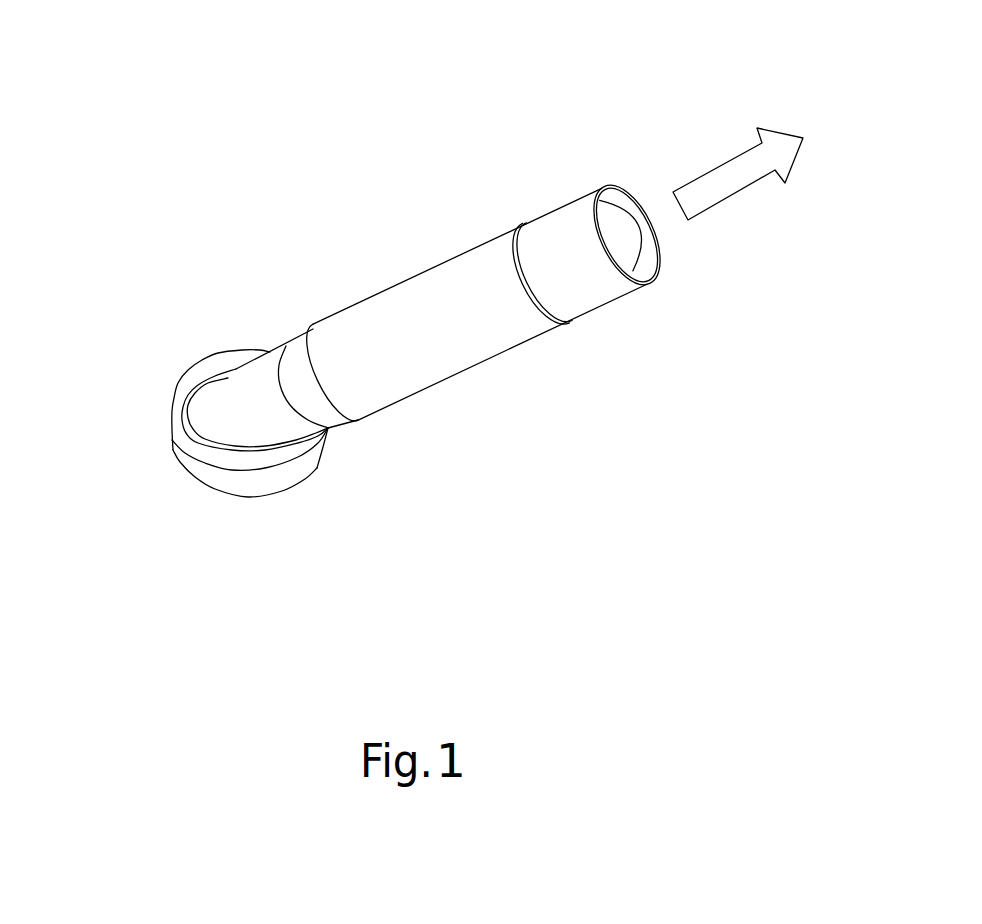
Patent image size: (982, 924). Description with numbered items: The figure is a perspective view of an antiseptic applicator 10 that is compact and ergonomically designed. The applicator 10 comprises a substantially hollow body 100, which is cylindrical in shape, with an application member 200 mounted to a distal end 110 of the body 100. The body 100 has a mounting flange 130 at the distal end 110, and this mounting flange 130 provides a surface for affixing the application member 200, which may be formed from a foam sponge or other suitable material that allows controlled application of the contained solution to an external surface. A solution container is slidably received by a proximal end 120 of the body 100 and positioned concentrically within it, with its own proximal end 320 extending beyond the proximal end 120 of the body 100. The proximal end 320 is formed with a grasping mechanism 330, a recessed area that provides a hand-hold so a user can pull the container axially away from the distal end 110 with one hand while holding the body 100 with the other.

The antiseptic applicator 10 is at (270, 184).
The body 100 is at (462, 375).
The distal end 110 is at (248, 452).
The proximal end 120 is at (541, 302).
The mounting flange 130 is at (209, 374).
The application member 200 is at (170, 428).
The proximal end 320 is at (603, 187).
The grasping mechanism 330 is at (539, 253).